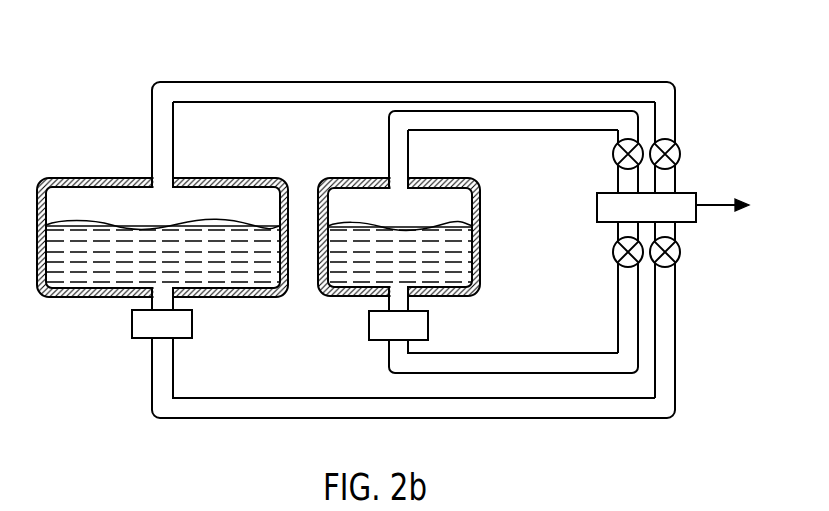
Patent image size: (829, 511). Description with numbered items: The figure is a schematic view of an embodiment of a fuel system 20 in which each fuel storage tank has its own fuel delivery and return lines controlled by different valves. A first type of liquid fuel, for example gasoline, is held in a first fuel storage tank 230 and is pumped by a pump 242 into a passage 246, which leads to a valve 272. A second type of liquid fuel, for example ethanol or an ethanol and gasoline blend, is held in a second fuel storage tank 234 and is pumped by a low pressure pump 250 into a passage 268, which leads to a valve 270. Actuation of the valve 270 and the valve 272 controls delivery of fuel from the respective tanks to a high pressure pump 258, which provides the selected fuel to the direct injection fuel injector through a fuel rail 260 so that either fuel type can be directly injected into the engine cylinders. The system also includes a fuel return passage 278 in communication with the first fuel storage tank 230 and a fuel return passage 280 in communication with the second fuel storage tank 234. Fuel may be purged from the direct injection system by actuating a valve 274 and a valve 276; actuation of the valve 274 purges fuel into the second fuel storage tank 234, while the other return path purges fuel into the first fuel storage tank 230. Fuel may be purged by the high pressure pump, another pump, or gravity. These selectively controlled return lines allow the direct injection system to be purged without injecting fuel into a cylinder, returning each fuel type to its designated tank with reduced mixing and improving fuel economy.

The fuel system 20 is at (416, 38).
The first fuel storage tank 230 is at (70, 178).
The second fuel storage tank 234 is at (370, 178).
The pump 242 is at (192, 320).
The passage 246 is at (173, 376).
The low pressure pump 250 is at (428, 323).
The high pressure pump 258 is at (597, 202).
The fuel rail 260 is at (715, 202).
The passage 268 is at (523, 353).
The valve 270 is at (611, 253).
The valve 272 is at (680, 252).
The valve 274 is at (612, 152).
The valve 276 is at (680, 154).
The fuel return passage 278 is at (675, 86).
The fuel return passage 280 is at (453, 132).